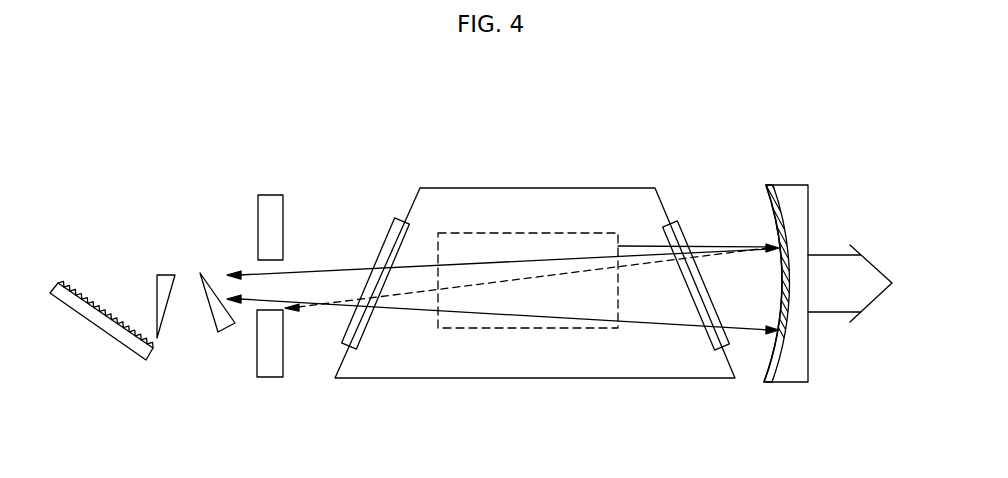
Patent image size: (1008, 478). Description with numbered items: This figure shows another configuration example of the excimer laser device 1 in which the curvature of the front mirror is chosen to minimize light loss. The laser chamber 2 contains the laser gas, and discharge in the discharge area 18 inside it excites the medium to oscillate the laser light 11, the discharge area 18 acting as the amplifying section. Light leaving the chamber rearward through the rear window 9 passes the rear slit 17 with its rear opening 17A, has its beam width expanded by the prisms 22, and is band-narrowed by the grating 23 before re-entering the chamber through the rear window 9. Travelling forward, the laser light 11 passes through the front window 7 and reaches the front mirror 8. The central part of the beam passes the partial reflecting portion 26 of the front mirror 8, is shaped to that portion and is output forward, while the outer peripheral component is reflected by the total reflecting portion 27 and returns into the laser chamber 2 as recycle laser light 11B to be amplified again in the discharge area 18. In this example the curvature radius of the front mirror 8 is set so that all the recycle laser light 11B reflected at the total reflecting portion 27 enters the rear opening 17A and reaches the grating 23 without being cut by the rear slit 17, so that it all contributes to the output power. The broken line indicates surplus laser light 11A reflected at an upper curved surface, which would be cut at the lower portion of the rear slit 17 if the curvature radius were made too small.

The excimer laser device 1 is at (612, 132).
The laser chamber 2 is at (513, 188).
The front window 7 is at (673, 220).
The front mirror 8 is at (800, 184).
The rear window 9 is at (362, 341).
The laser light 11 is at (833, 268).
The surplus laser light 11A is at (410, 295).
The recycle laser light 11B is at (363, 267).
The rear slit 17 is at (268, 193).
The rear opening 17A is at (279, 262).
The discharge area 18 is at (513, 328).
The prisms 22 is at (200, 272).
The grating 23 is at (107, 337).
The partial reflecting portion 26 is at (781, 281).
The total reflecting portion 27 is at (768, 183).